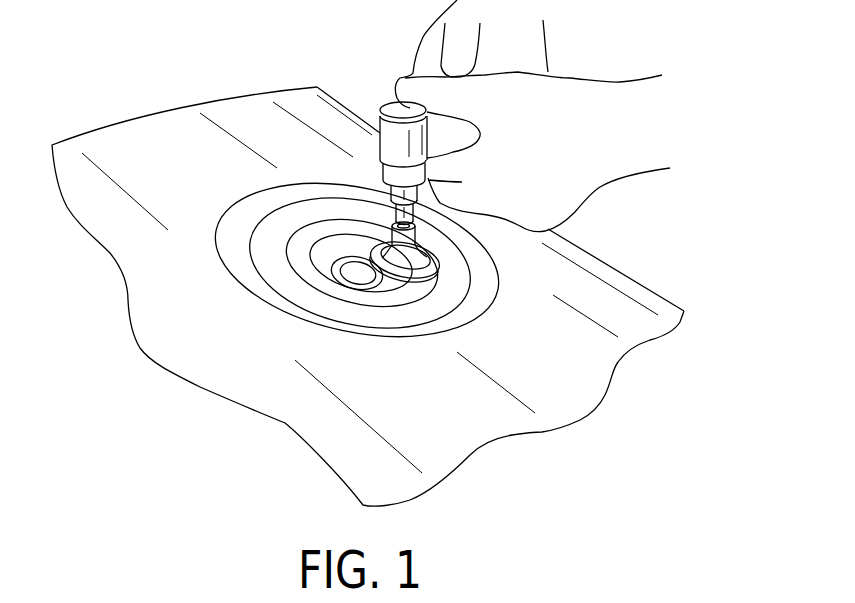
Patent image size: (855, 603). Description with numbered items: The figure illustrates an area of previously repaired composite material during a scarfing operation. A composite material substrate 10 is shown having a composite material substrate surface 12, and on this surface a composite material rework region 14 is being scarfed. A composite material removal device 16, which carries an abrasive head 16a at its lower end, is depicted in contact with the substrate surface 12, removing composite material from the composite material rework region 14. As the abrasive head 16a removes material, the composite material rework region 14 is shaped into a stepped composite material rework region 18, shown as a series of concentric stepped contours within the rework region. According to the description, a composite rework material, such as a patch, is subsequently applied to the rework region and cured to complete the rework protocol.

The composite material substrate 10 is at (541, 431).
The composite material substrate surface 12 is at (655, 295).
The composite material rework region 14 is at (256, 206).
The composite material removal device 16 is at (385, 140).
The abrasive head 16a is at (418, 264).
The stepped composite material rework region 18 is at (308, 280).